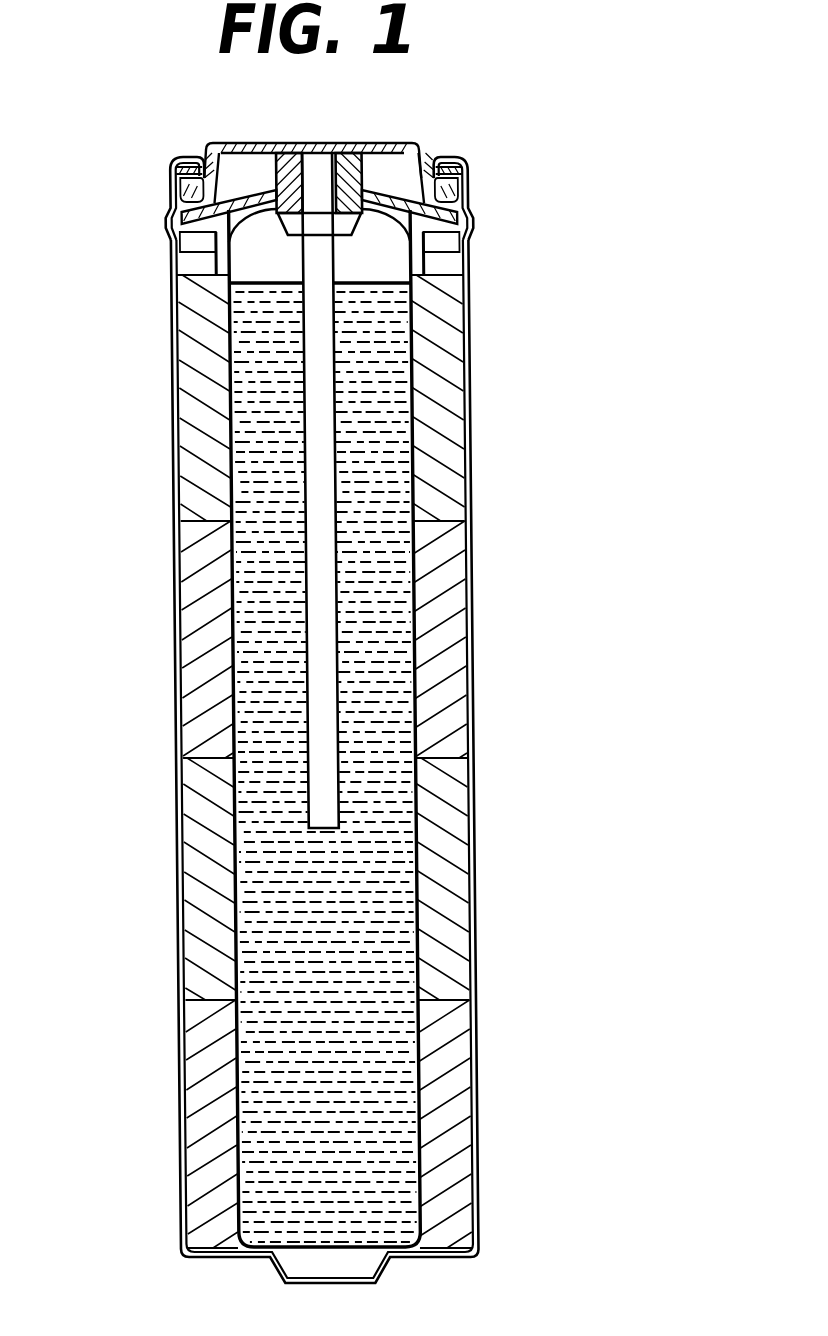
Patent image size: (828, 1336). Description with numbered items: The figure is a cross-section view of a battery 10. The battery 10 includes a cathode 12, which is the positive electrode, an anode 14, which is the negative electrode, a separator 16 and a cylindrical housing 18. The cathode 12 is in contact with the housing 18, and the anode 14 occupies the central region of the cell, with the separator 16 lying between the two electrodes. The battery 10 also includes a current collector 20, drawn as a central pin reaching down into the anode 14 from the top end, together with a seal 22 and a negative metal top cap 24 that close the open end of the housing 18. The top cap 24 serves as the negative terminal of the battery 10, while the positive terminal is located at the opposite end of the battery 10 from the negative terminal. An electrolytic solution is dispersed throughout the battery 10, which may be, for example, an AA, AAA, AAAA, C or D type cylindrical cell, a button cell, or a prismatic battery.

The battery 10 is at (584, 229).
The cathode 12 is at (452, 370).
The anode 14 is at (385, 857).
The separator 16 is at (228, 690).
The cylindrical housing 18 is at (172, 482).
The current collector 20 is at (325, 637).
The seal 22 is at (213, 233).
The negative metal top cap 24 is at (413, 142).